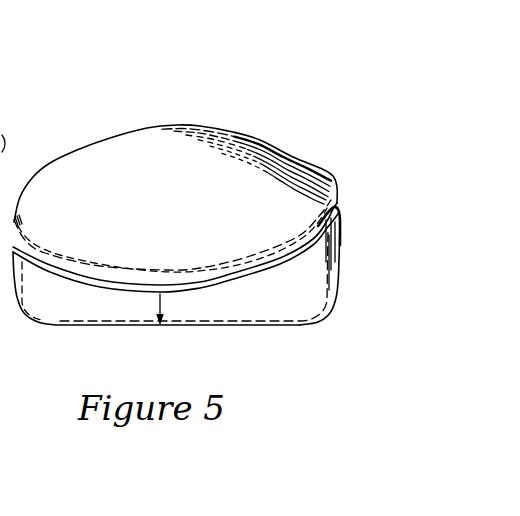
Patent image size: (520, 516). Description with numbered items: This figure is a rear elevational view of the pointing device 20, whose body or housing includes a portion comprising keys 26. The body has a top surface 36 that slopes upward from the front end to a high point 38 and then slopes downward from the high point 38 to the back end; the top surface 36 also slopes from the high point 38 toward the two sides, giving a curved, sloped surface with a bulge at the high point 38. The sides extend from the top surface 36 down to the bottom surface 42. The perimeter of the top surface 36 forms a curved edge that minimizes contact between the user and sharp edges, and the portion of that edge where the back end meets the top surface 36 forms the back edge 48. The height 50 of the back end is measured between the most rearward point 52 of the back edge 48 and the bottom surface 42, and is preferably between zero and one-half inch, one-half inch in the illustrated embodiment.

The pointing device 20 is at (292, 120).
The keys 26 is at (12, 82).
The top surface 36 is at (115, 172).
The high point 38 is at (173, 124).
The bottom surface 42 is at (303, 331).
The back edge 48 is at (250, 252).
The height 50 is at (160, 297).
The most rearward point 52 is at (160, 282).